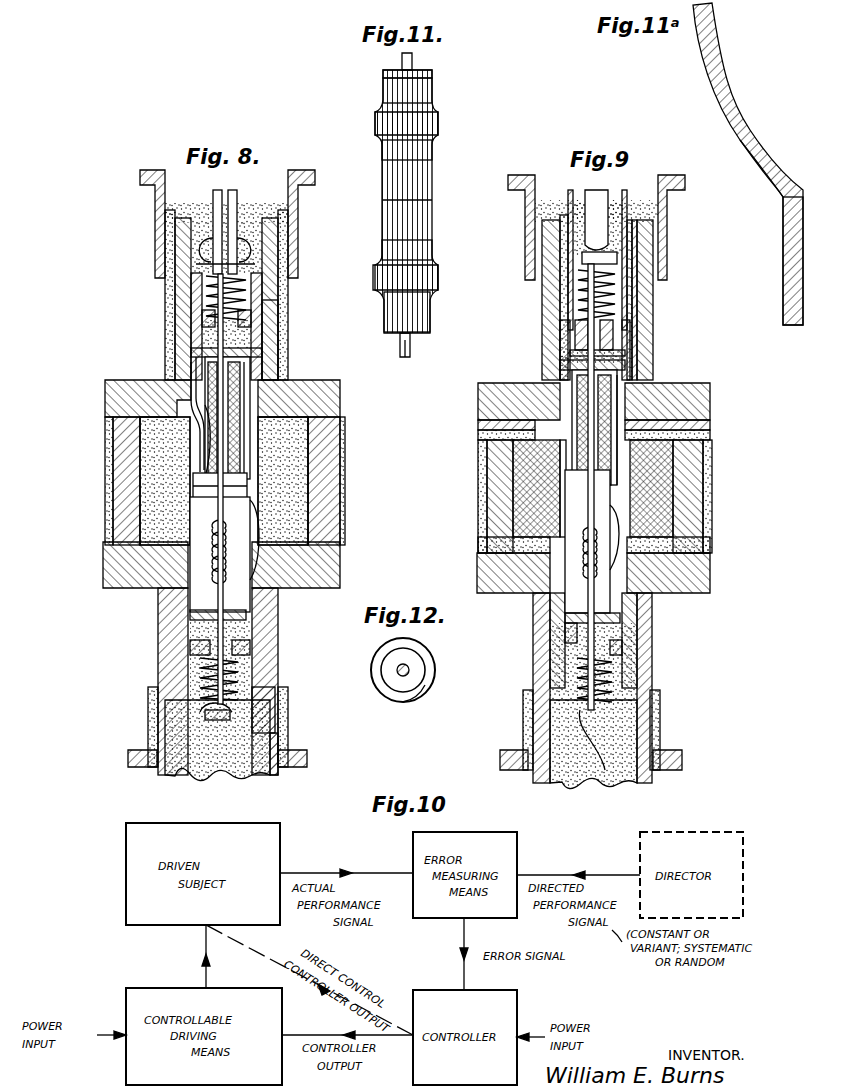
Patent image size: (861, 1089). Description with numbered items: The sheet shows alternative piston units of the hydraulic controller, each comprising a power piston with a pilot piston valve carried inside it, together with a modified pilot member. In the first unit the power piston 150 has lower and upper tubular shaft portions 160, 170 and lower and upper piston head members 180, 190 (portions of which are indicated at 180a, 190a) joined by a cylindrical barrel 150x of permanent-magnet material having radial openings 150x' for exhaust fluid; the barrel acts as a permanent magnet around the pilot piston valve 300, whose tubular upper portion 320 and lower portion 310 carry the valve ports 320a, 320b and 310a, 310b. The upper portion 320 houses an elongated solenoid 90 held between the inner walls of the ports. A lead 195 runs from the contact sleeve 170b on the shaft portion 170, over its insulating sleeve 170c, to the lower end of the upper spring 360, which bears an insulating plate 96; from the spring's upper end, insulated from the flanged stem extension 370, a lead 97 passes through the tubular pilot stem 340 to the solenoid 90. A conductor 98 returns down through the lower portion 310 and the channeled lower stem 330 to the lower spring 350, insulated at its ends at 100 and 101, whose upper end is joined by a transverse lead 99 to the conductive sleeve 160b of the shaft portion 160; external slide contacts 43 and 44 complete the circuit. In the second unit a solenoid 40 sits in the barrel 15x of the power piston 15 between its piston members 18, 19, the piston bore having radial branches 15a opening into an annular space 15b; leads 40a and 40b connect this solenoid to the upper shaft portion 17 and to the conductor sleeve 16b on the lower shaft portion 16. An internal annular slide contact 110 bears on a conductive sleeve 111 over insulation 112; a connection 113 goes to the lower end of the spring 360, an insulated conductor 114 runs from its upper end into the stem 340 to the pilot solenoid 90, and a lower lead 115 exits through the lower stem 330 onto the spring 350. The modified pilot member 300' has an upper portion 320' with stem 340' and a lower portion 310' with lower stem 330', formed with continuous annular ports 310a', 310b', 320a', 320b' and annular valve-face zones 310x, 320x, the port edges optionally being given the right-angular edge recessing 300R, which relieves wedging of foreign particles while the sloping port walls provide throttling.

In FIG. 8, the upper contact sleeve 43 is at (157, 206).
In FIG. 9, the upper contact sleeve 43 is at (530, 210).
In FIG. 8, the pilot-piston valve stem 340 is at (187, 222).
In FIG. 9, the pilot-piston valve stem 340 is at (562, 365).
In FIG. 8, the pilot-piston valve stem extension 370 is at (238, 201).
In FIG. 9, the pilot-piston valve stem extension 370 is at (596, 196).
In FIG. 8, the lead 97 is at (185, 270).
In FIG. 8, the upper tubular shaft portion 170 is at (270, 262).
In FIG. 9, the upper tubular shaft portion 170 is at (558, 307).
In FIG. 8, the contact sleeve 170b is at (192, 295).
In FIG. 9, the contact sleeve 170b is at (545, 336).
In FIG. 8, the inner sleeve portion 170c is at (200, 305).
In FIG. 9, the inner sleeve portion 170c is at (560, 340).
In FIG. 8, the lead 195 is at (200, 318).
In FIG. 8, the upper spring 360 is at (246, 302).
In FIG. 9, the upper spring 360 is at (546, 290).
In FIG. 8, the insulating plate 96 is at (272, 325).
In FIG. 8, the upper valve port 320a is at (182, 352).
In FIG. 8, the upper portion of pilot piston valve 320 is at (266, 413).
In FIG. 12, the upper portion of pilot piston valve 320 is at (397, 692).
In FIG. 9, the upper portion of pilot piston valve 320 is at (632, 421).
In FIG. 8, the solenoid 90 is at (242, 372).
In FIG. 9, the solenoid 90 is at (613, 386).
In FIG. 8, the housing lip 190a is at (183, 378).
In FIG. 8, the upper piston head member 190 is at (112, 393).
In FIG. 8, the upper valve port 320b is at (131, 441).
In FIG. 8, the radial openings 150x' is at (221, 481).
In FIG. 8, the cylindrical barrel 150x is at (220, 481).
In FIG. 8, the pilot piston valve 300 is at (286, 479).
In FIG. 8, the lower valve port 310b is at (322, 481).
In FIG. 8, the lower piston head member 180 is at (110, 568).
In FIG. 8, the power piston 150 is at (150, 672).
In FIG. 8, the housing tube wall 180a is at (188, 597).
In FIG. 8, the lower portion of pilot piston valve 310 is at (195, 681).
In FIG. 8, the conductor 98 is at (248, 778).
In FIG. 8, the lower valve port 310a is at (255, 607).
In FIG. 8, the insulation 101 is at (212, 643).
In FIG. 8, the transverse lead 99 is at (250, 648).
In FIG. 8, the lower spring 350 is at (200, 684).
In FIG. 9, the lower spring 350 is at (640, 679).
In FIG. 8, the insulation 100 is at (200, 716).
In FIG. 8, the lower contact sleeve 44 is at (150, 738).
In FIG. 9, the lower contact sleeve 44 is at (505, 761).
In FIG. 8, the lower tubular shaft portion 160 is at (262, 714).
In FIG. 8, the outer conductive sleeve 160b is at (282, 740).
In FIG. 8, the lower piston stem 330 is at (212, 519).
In FIG. 9, the lower piston stem 330 is at (600, 535).
In FIG. 9, the annular slide contact member 110 is at (627, 205).
In FIG. 9, the conductive sleeve 111 is at (656, 236).
In FIG. 9, the insulation 112 is at (655, 250).
In FIG. 9, the electrical connection 113 is at (640, 328).
In FIG. 9, the insulated conductor 114 is at (624, 348).
In FIG. 9, the upper piston member 19 is at (708, 406).
In FIG. 9, the lead 40a is at (478, 407).
In FIG. 9, the radial branches 15a is at (508, 433).
In FIG. 9, the solenoid 40 is at (495, 480).
In FIG. 9, the annular space 15b is at (488, 505).
In FIG. 9, the barrel 15x is at (495, 516).
In FIG. 9, the power piston 15 is at (528, 665).
In FIG. 9, the lower piston member 18 is at (700, 570).
In FIG. 9, the lead 40b is at (525, 548).
In FIG. 9, the conductor sleeve 16b is at (650, 633).
In FIG. 9, the lower shaft portion 16 is at (540, 671).
In FIG. 9, the upper shaft portion 17 is at (625, 668).
In FIG. 9, the lower lead 115 is at (568, 790).
In FIG. 11, the spool end 320' is at (382, 63).
In FIG. 11, the pin 340' is at (435, 60).
In FIG. 12, the pin 340' is at (437, 674).
In FIG. 11, the annular port 320a' is at (435, 91).
In FIG. 11A, the annular port 320a' is at (767, 145).
In FIG. 11, the annular valve-face zone 320x is at (380, 124).
In FIG. 11A, the annular valve-face zone 320x is at (790, 268).
In FIG. 12, the annular valve-face zone 320x is at (430, 698).
In FIG. 11, the annular port 320b' is at (432, 152).
In FIG. 11, the armature body 300' is at (425, 201).
In FIG. 12, the armature body 300' is at (386, 663).
In FIG. 11, the annular port 310b' is at (430, 247).
In FIG. 11, the annular valve-face zone 310x is at (380, 278).
In FIG. 11, the annular port 310a' is at (431, 312).
In FIG. 11, the lower end 310' is at (431, 345).
In FIG. 11, the stem 330' is at (382, 354).
In FIG. 11A, the rectangular edge formation 300R is at (798, 192).